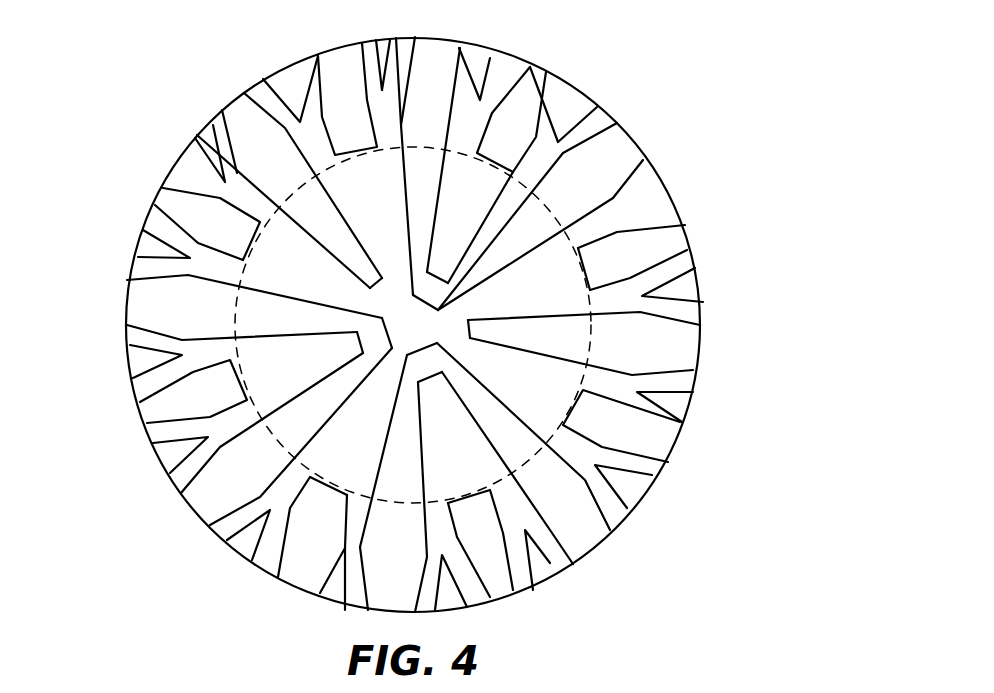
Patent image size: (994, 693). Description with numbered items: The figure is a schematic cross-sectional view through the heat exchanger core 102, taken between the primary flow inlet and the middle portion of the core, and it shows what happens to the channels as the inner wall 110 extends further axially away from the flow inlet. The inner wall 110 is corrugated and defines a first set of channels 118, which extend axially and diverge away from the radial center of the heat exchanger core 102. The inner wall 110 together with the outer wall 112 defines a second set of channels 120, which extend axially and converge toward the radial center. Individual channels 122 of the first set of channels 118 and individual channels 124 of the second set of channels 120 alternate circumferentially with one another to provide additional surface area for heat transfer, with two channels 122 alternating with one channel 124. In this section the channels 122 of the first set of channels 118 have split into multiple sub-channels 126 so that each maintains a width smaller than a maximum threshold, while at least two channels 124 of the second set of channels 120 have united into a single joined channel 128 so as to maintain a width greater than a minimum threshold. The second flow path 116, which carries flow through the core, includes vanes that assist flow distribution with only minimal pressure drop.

The heat exchanger core 102 is at (172, 156).
The inner wall 110 is at (210, 417).
The outer wall 112 is at (677, 457).
The second flow path 116 is at (573, 500).
The first set of channels 118 is at (547, 128).
The second set of channels 120 is at (300, 213).
The channel 122 is at (630, 185).
The channel 124 is at (435, 160).
The sub-channel 126 is at (677, 262).
The joined channel 128 is at (420, 277).